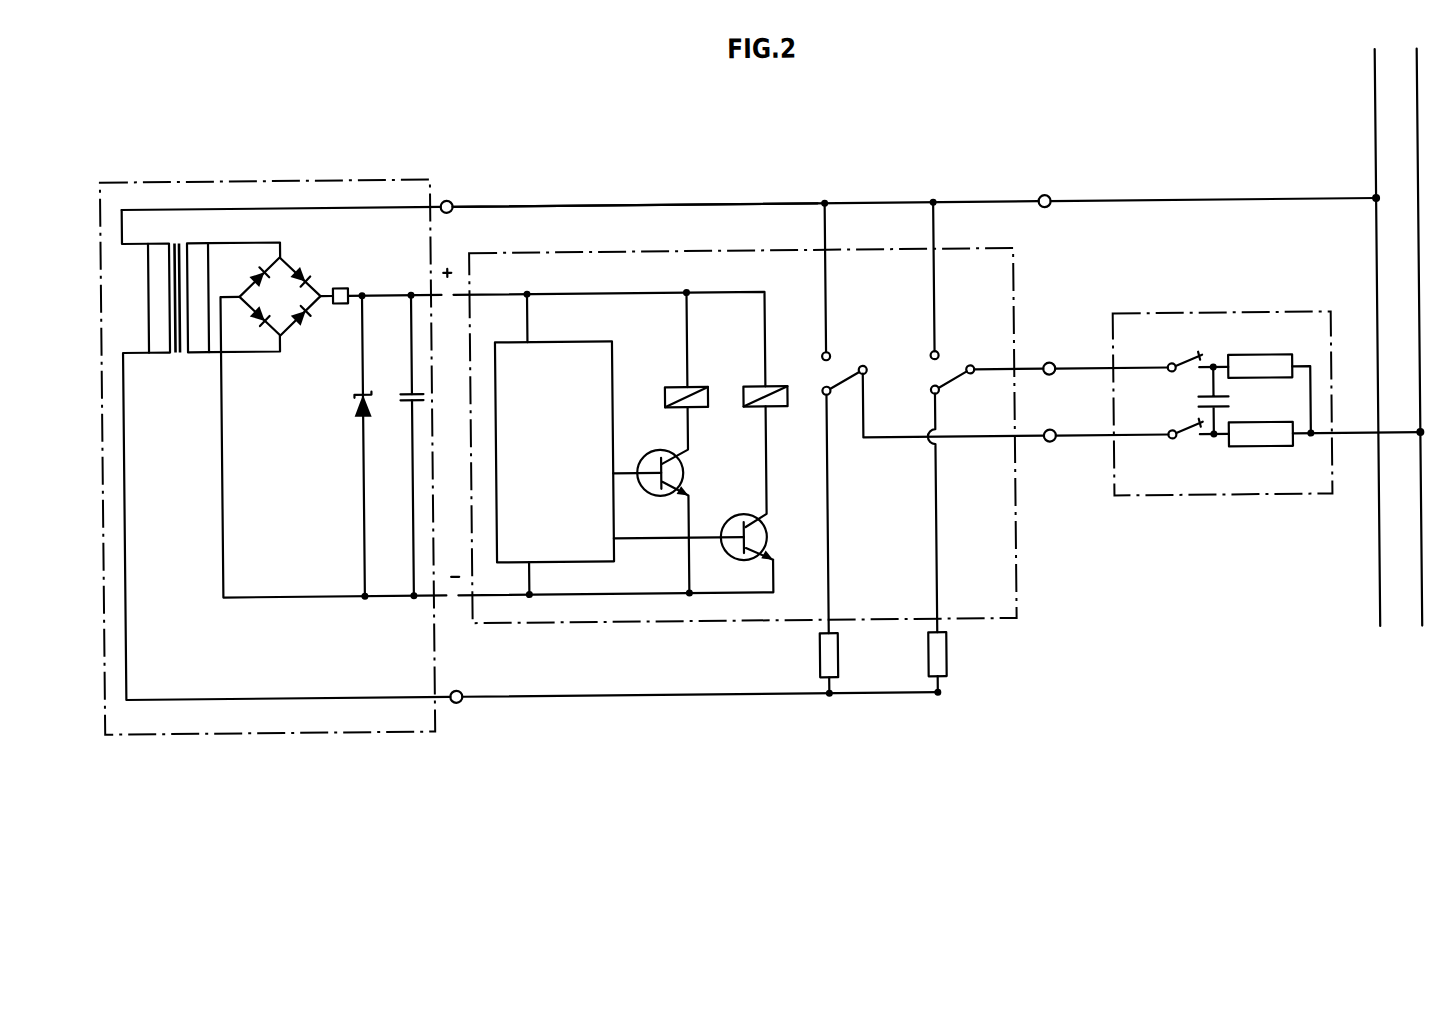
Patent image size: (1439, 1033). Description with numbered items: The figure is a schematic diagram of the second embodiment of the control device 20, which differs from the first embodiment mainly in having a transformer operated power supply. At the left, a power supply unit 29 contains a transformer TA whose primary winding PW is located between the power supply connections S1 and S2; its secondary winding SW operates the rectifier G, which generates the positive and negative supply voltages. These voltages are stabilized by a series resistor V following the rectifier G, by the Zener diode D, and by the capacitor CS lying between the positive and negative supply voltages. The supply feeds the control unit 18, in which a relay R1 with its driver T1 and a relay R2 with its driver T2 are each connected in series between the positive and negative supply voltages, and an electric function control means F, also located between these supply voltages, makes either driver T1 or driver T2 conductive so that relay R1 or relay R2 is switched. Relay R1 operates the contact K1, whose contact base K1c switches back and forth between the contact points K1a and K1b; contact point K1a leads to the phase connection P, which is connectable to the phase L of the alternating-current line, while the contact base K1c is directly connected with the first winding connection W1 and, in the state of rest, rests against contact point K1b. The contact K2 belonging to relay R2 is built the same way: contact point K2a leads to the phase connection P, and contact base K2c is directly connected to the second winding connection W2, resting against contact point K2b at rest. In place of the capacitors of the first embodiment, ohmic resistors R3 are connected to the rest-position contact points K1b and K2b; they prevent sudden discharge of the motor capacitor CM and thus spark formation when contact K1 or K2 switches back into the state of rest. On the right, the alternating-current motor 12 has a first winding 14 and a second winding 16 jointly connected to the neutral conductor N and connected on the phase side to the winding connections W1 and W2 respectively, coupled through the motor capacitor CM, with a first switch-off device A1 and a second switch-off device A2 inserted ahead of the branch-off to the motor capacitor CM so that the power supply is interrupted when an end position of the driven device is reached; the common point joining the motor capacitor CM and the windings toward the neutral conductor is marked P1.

The power supply unit 29 is at (267, 409).
The primary winding PW is at (152, 298).
The secondary winding SW is at (208, 257).
The transformer TA is at (178, 349).
The rectifier G is at (287, 262).
The series resistor V is at (344, 284).
The Zener diode D is at (360, 389).
The capacitor CS is at (408, 390).
The power supply connection S1 is at (450, 198).
The power supply connection S2 is at (456, 700).
The control device 20 is at (634, 143).
The control unit 18 is at (742, 355).
The function control means F is at (554, 451).
The relay R1 is at (667, 393).
The relay R2 is at (747, 391).
The driver T1 is at (643, 460).
The driver T2 is at (737, 515).
The contact K1 is at (840, 386).
The contact point K1a is at (823, 353).
The contact point K1b is at (824, 396).
The contact base K1c is at (866, 367).
The contact K2 is at (946, 386).
The contact point K2a is at (932, 353).
The contact point K2b is at (932, 394).
The contact base K2c is at (974, 367).
The first winding connection W1 is at (1052, 432).
The second winding connection W2 is at (1052, 365).
The ohmic resistor R3 is at (838, 655).
The phase connection P is at (1049, 198).
The phase L is at (1375, 319).
The neutral conductor N is at (1420, 319).
The alternating-current motor 12 is at (1222, 356).
The first switch-off device A1 is at (1190, 437).
The second switch-off device A2 is at (1186, 357).
The second winding 16 is at (1253, 358).
The first winding 14 is at (1262, 452).
The motor capacitor CM is at (1193, 399).
The common terminal P1 is at (1211, 443).